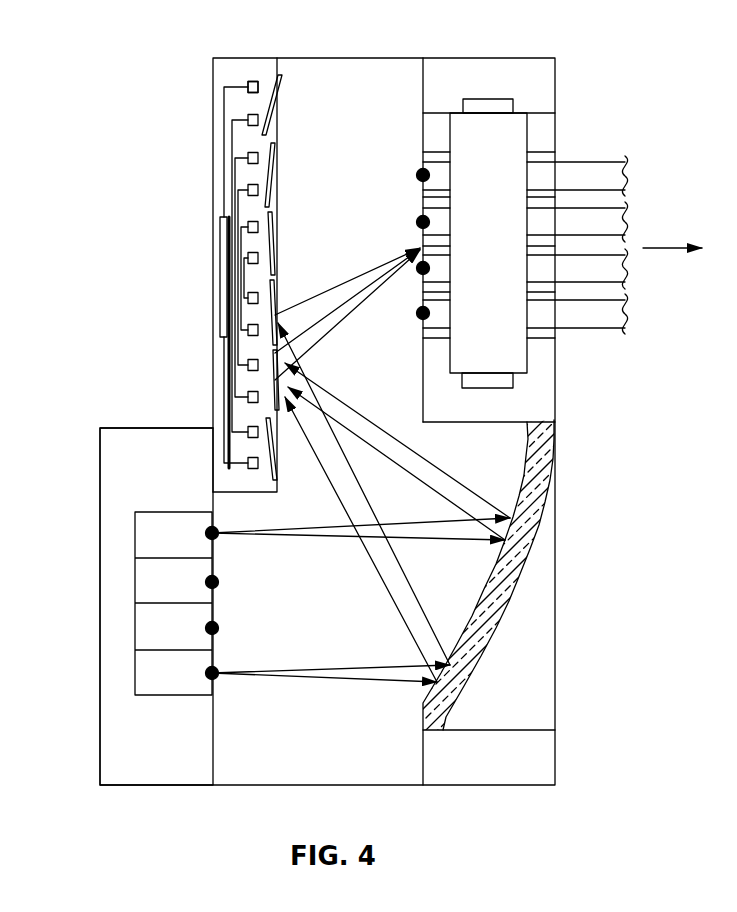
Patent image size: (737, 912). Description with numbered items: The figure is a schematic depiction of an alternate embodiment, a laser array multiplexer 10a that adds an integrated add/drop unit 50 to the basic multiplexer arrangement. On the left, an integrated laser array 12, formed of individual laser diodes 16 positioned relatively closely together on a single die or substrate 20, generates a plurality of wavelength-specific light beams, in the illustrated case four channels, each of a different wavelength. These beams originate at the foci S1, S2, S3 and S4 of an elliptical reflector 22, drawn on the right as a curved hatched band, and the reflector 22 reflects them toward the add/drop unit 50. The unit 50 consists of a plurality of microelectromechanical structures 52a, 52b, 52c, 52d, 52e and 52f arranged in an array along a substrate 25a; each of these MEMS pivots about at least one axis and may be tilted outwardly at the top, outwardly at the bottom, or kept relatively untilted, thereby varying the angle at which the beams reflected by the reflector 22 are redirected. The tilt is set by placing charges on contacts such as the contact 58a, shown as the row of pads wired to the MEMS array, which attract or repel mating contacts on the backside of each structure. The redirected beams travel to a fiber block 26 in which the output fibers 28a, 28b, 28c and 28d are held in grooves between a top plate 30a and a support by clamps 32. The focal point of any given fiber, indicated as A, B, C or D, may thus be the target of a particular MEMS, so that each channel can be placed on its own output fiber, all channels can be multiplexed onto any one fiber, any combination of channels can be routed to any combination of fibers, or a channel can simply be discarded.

The laser array multiplexer 10a is at (146, 283).
The integrated laser array 12 is at (148, 481).
The laser diodes 16 is at (145, 543).
The substrate 20 is at (188, 440).
The elliptical reflector 22 is at (522, 583).
The mirror array substrate 25a is at (355, 72).
The fiber block 26 is at (545, 128).
The output fiber 28a is at (588, 168).
The output fiber 28b is at (604, 220).
The output fiber 28c is at (607, 273).
The output fiber 28d is at (590, 320).
The top plate 30a is at (507, 133).
The clamps 32 is at (490, 99).
The integrated add/drop unit 50 is at (195, 187).
The microelectromechanical structure (MEMS) 52a is at (280, 97).
The microelectromechanical structure (MEMS) 52b is at (275, 165).
The microelectromechanical structure (MEMS) 52c is at (275, 230).
The microelectromechanical structure (MEMS) 52d is at (275, 290).
The microelectromechanical structure (MEMS) 52e is at (278, 378).
The microelectromechanical structure (MEMS) 52f is at (278, 460).
The contact 58a is at (254, 81).
The focal point of fiber A is at (421, 175).
The focal point of fiber B is at (421, 222).
The focal point of fiber C is at (421, 268).
The focal point of fiber D is at (421, 313).
The focus of elliptical reflector S1 is at (219, 535).
The focus of elliptical reflector S2 is at (230, 583).
The focus of elliptical reflector S3 is at (230, 629).
The focus of elliptical reflector S4 is at (218, 676).